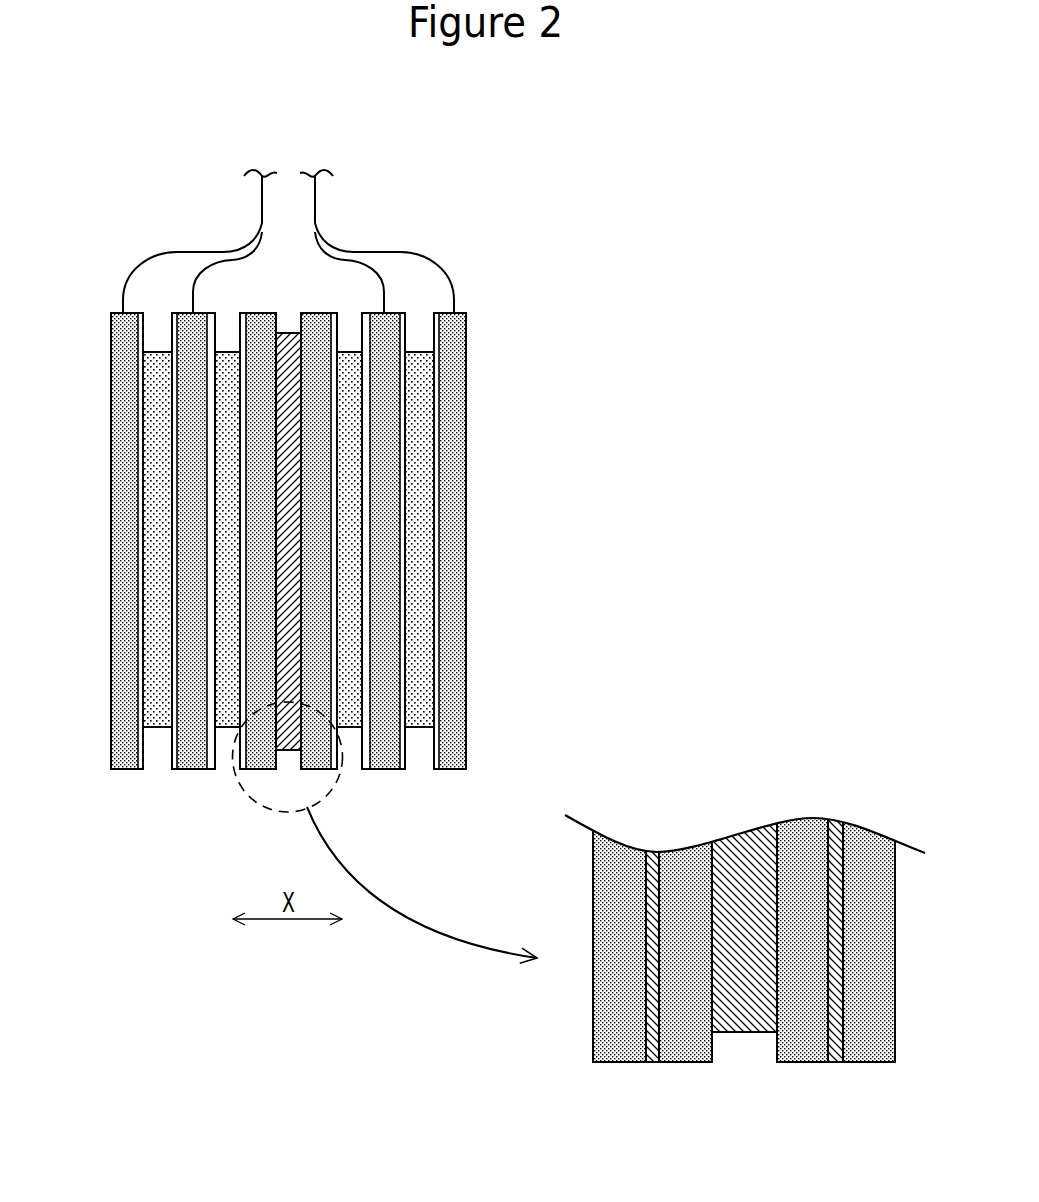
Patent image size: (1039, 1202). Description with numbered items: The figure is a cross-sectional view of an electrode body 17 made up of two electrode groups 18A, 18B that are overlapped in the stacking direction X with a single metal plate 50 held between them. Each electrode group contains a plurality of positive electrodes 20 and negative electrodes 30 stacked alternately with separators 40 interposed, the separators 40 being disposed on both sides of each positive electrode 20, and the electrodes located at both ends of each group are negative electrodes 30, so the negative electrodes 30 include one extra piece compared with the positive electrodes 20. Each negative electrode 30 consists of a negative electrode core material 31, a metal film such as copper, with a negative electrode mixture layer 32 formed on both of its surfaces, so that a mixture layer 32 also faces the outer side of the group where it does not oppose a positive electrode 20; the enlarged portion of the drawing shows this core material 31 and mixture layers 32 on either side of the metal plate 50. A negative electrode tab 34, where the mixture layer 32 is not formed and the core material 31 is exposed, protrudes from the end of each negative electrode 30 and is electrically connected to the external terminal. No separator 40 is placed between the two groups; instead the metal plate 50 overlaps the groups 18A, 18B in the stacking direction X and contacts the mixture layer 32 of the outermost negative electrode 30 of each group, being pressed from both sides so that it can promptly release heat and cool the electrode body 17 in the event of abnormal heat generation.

The electrode body 17 is at (580, 158).
The electrode group 18A is at (135, 243).
The electrode group 18B is at (442, 243).
The positive electrode 20 is at (160, 720).
The negative electrode 30 is at (115, 755).
The negative electrode core material 31 is at (657, 1053).
The negative electrode mixture layer 32 is at (608, 1053).
The negative electrode tab 34 is at (187, 252).
The separator 40 is at (140, 755).
The metal plate 50 is at (287, 752).